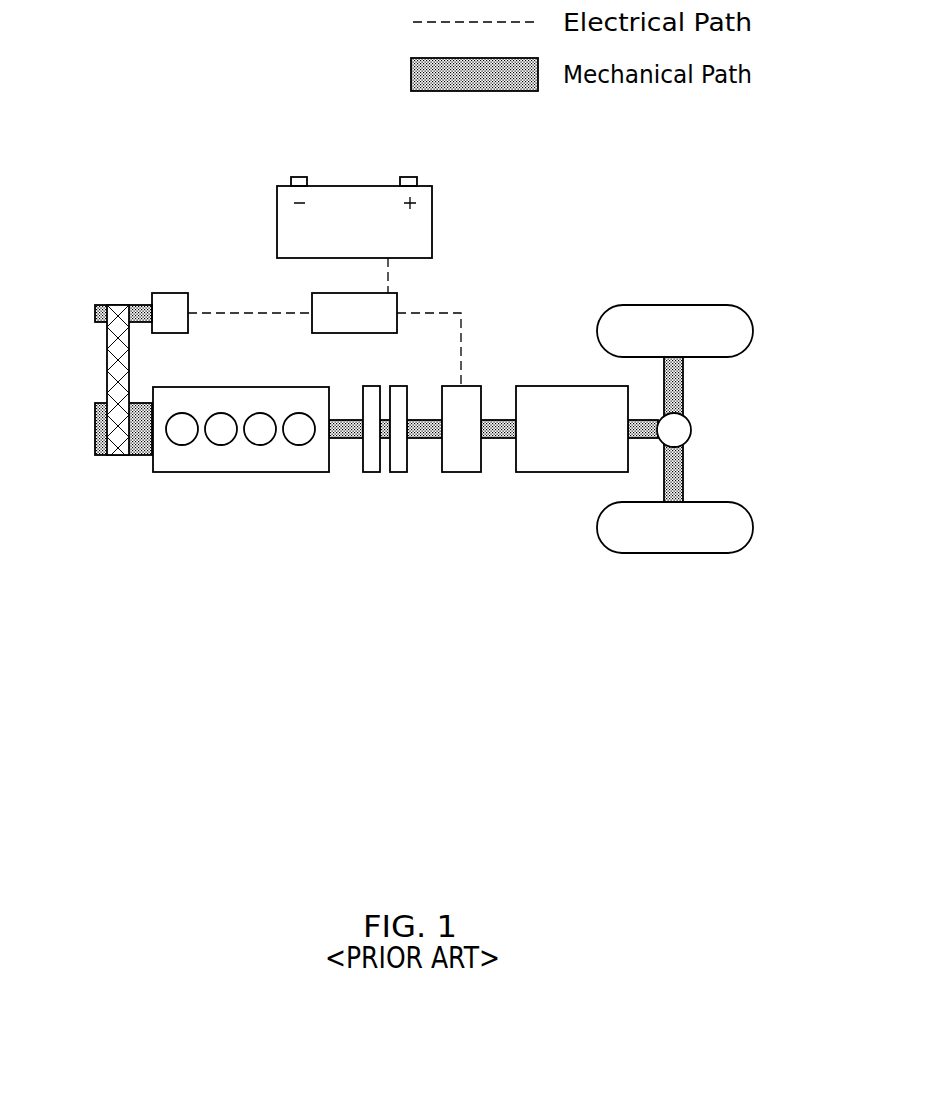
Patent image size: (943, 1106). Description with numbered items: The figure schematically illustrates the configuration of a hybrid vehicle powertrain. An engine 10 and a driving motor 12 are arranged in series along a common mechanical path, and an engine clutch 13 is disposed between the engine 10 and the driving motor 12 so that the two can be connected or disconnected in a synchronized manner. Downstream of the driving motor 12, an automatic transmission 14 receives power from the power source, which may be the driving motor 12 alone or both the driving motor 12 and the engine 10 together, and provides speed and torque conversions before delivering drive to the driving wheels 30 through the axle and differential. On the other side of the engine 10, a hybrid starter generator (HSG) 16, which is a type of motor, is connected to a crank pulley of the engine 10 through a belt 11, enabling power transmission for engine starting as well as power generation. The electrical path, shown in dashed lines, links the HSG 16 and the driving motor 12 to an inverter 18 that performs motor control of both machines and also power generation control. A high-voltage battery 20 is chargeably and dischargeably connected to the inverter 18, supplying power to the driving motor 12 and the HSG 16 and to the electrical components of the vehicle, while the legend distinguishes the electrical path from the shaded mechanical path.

The engine 10 is at (240, 472).
The belt 11 is at (108, 343).
The driving motor 12 is at (461, 472).
The engine clutch 13 is at (385, 478).
The automatic transmission 14 is at (549, 472).
The hybrid starter generator (HSG) 16 is at (170, 293).
The inverter 18 is at (312, 305).
The high-voltage battery 20 is at (433, 220).
The driving wheels 30 is at (708, 343).